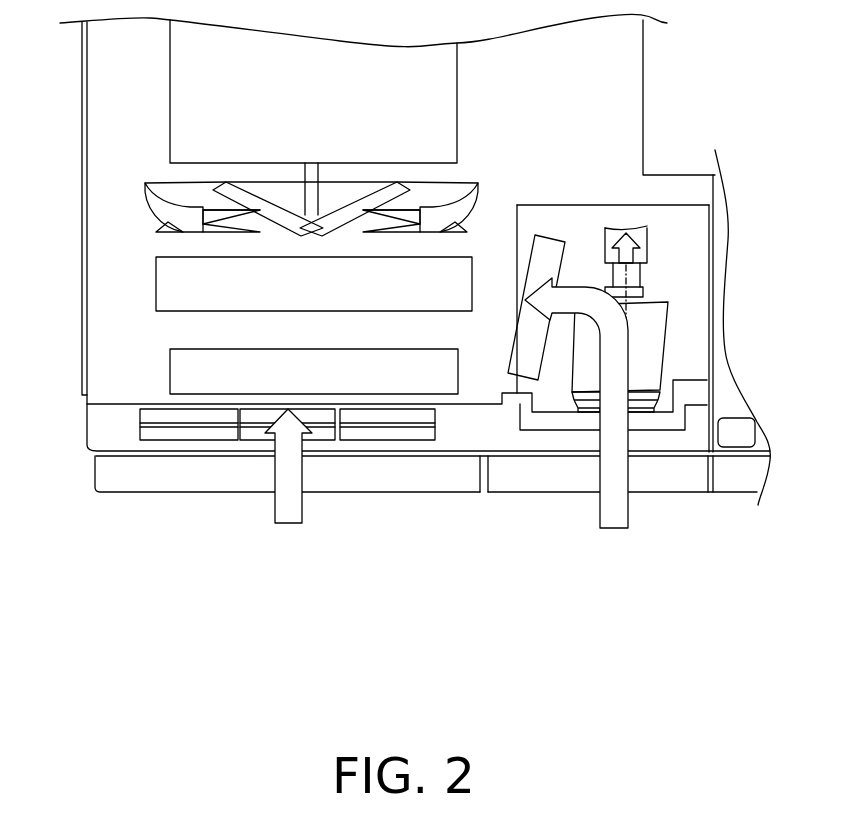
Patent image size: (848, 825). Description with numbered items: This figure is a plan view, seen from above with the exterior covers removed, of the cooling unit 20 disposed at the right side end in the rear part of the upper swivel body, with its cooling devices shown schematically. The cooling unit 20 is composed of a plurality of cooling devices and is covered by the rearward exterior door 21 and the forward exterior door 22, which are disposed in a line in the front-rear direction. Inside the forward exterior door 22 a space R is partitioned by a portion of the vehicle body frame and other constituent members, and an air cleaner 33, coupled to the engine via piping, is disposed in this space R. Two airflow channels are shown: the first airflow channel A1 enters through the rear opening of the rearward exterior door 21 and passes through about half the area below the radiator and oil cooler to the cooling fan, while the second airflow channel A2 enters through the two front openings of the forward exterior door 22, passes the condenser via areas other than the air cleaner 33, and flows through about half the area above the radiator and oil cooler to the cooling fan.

The cooling unit 20 is at (138, 377).
The rearward exterior door 21 is at (185, 477).
The forward exterior door 22 is at (545, 477).
The air cleaner 33 is at (738, 438).
The space R is at (672, 342).
The first airflow channel A1 is at (290, 503).
The second airflow channel A2 is at (617, 505).